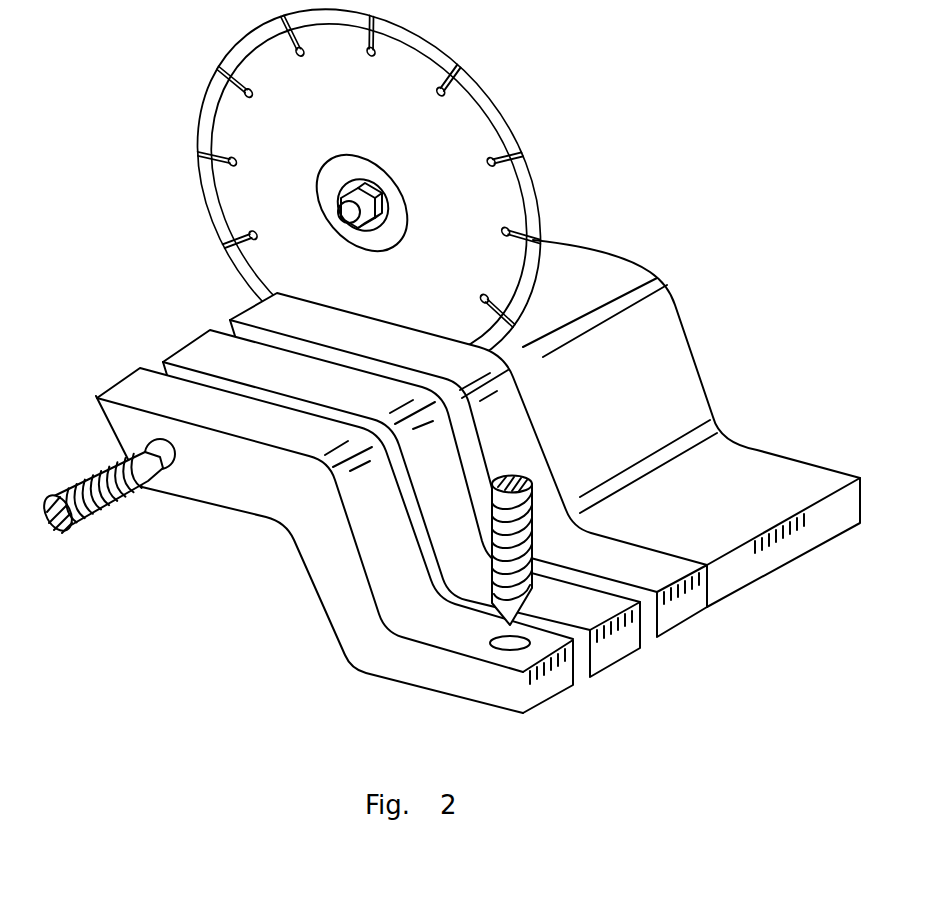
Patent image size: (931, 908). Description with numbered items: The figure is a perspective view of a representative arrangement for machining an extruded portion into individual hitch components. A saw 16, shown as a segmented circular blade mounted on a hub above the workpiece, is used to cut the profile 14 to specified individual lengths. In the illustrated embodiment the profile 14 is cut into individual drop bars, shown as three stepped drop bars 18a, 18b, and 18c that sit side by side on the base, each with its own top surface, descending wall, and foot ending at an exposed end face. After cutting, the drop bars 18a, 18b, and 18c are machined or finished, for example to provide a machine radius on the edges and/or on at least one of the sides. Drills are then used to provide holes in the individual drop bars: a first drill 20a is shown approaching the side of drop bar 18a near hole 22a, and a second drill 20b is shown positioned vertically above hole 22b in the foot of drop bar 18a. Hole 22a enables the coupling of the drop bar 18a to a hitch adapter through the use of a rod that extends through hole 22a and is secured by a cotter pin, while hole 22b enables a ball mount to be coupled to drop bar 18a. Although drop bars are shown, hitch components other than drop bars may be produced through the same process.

The profile 14 is at (638, 410).
The saw 16 is at (365, 117).
The drop bar 18a is at (128, 388).
The drop bar 18b is at (197, 355).
The drop bar 18c is at (257, 315).
The drill 20a is at (93, 512).
The drill 20b is at (490, 547).
The hole 22a is at (163, 472).
The hole 22b is at (528, 641).